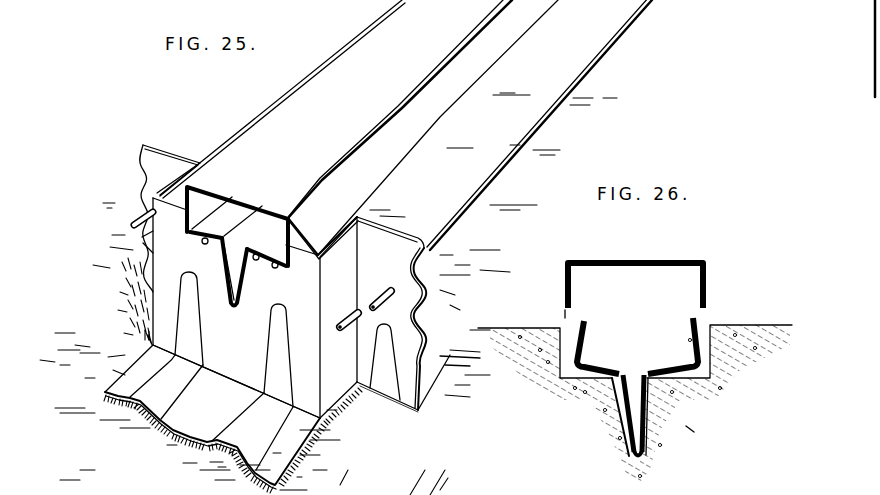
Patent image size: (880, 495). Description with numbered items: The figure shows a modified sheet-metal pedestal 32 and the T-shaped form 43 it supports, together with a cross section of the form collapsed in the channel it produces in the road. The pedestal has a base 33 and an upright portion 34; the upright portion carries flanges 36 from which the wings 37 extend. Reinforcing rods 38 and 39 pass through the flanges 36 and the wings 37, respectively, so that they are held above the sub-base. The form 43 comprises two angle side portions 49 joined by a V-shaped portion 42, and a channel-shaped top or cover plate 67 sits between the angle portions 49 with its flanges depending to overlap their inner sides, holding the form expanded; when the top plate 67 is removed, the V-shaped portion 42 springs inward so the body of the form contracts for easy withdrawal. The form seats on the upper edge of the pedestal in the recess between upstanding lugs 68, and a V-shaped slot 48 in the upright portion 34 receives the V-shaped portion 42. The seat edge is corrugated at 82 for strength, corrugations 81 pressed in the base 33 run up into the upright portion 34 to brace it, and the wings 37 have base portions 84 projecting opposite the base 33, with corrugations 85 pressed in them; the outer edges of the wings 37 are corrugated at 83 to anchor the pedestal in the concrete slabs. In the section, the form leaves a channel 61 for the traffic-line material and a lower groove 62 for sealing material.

In FIG. 25, the post assembly 32 is at (129, 148).
In FIG. 25, the base 33 is at (187, 415).
In FIG. 25, the upright portion 34 is at (234, 339).
In FIG. 25, the flanges 36 is at (337, 388).
In FIG. 25, the wings 37 is at (163, 152).
In FIG. 25, the reinforcing rods 38 is at (345, 328).
In FIG. 25, the reinforcing rods 39 is at (488, 182).
In FIG. 25, the V-shaped portion 42 is at (243, 263).
In FIG. 26, the V-shaped portion 42 is at (635, 382).
In FIG. 25, the form 43 is at (445, 133).
In FIG. 26, the form 43 is at (562, 311).
In FIG. 25, the V-shaped recess or slot 48 is at (238, 265).
In FIG. 25, the angle side portions 49 is at (317, 188).
In FIG. 26, the angle side portions 49 is at (690, 330).
In FIG. 26, the channel 61 is at (716, 354).
In FIG. 26, the groove 62 is at (704, 435).
In FIG. 25, the top or cover plate 67 is at (268, 128).
In FIG. 26, the top or cover plate 67 is at (633, 258).
In FIG. 25, the upstanding lugs 68 is at (168, 200).
In FIG. 25, the corrugations 81 is at (240, 432).
In FIG. 25, the corrugations 82 is at (259, 259).
In FIG. 25, the corrugated outer edges 83 is at (140, 200).
In FIG. 25, the base portions 84 is at (452, 360).
In FIG. 25, the corrugations 85 is at (385, 377).